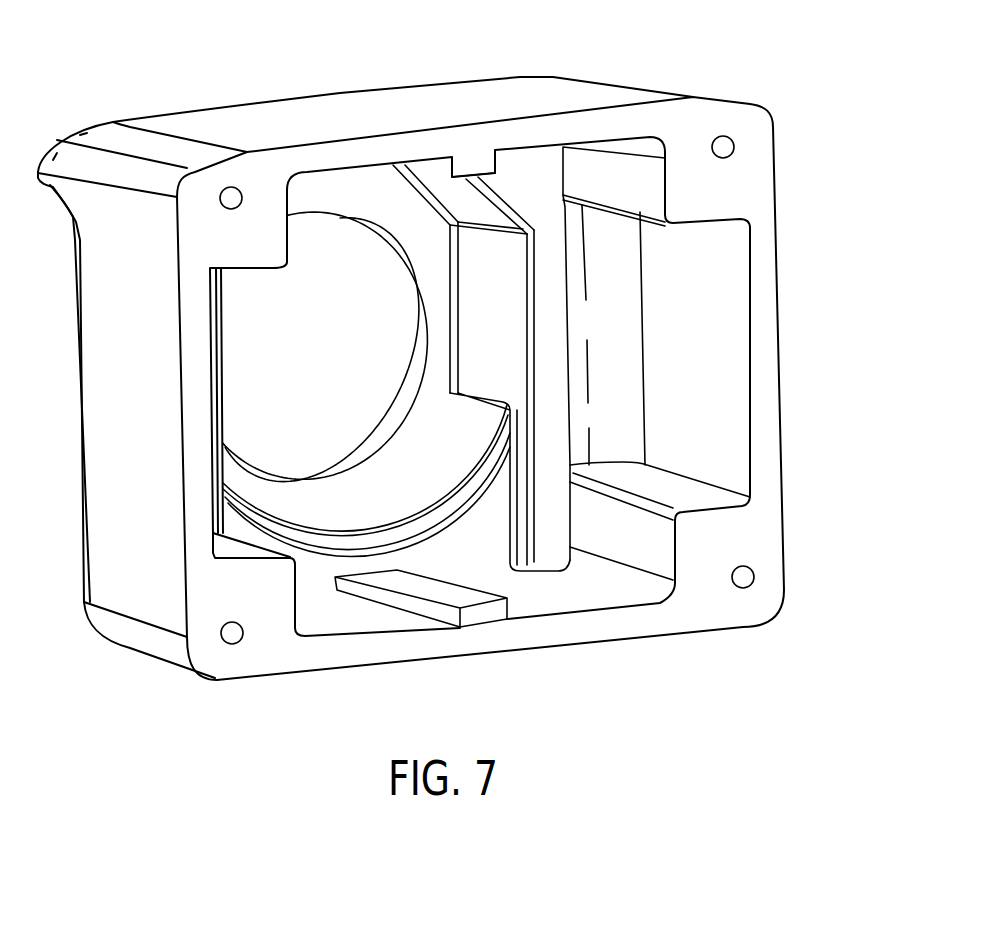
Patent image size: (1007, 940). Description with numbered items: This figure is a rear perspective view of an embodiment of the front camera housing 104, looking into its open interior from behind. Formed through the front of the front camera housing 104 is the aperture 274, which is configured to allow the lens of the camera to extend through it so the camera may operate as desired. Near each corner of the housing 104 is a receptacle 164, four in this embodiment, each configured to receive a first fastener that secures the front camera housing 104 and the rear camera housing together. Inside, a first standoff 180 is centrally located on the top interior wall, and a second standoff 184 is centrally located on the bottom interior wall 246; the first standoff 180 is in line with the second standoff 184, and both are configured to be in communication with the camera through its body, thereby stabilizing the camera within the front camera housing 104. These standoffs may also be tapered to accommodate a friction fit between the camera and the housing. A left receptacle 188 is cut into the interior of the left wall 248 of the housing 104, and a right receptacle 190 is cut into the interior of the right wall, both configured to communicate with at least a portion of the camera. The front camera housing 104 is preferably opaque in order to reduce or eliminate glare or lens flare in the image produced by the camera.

The front camera housing 104 is at (675, 36).
The receptacle 164 is at (233, 198).
The first standoff 180 is at (481, 165).
The second standoff 184 is at (487, 603).
The left receptacle 188 is at (727, 360).
The right receptacle 190 is at (215, 387).
The bottom interior wall 246 is at (553, 600).
The left wall 248 is at (627, 187).
The aperture 274 is at (257, 307).